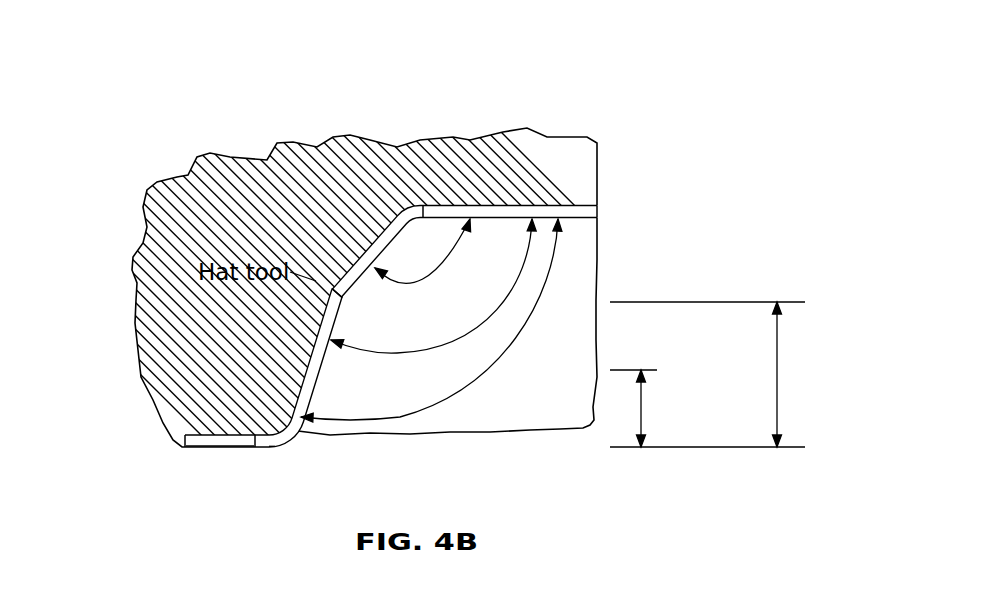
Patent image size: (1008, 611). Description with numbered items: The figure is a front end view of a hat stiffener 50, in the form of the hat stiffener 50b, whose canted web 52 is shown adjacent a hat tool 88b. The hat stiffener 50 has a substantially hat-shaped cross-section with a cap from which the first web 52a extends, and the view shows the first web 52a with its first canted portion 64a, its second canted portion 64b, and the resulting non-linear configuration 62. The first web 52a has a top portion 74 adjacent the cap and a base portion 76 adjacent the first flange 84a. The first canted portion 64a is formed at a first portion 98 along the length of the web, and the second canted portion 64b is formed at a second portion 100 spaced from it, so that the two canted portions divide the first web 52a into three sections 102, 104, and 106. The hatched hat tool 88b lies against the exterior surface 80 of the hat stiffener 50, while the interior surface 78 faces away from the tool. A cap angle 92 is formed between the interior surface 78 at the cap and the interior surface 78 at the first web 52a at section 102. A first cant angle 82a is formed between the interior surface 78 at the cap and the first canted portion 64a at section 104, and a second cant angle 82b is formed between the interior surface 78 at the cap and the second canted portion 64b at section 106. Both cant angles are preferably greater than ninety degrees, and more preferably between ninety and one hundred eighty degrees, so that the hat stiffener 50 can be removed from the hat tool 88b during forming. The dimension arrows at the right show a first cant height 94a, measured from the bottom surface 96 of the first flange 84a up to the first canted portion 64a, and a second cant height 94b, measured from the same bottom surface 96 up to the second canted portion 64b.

The hat stiffener 50 is at (577, 181).
The hat stiffener 50b is at (298, 431).
The canted webs 52 is at (250, 416).
The first web 52a is at (300, 242).
The non-linear configuration 62 is at (330, 366).
The first canted portion 64a is at (343, 295).
The second canted portion 64b is at (307, 365).
The top portion 74 is at (397, 211).
The base portion 76 is at (275, 447).
The interior surface 78 is at (513, 219).
The exterior surface 80 is at (527, 206).
The first cant angle 82a is at (528, 258).
The second cant angle 82b is at (548, 279).
The first flange 84a is at (198, 447).
The hat tool 88b is at (197, 270).
The cap angle 92 is at (495, 212).
The first cant height 94a is at (779, 342).
The second cant height 94b is at (647, 405).
The bottom surface 96 is at (230, 447).
The first portion 98 is at (322, 283).
The second portion 100 is at (308, 352).
The section 102 is at (334, 292).
The section 104 is at (322, 306).
The section 106 is at (297, 392).